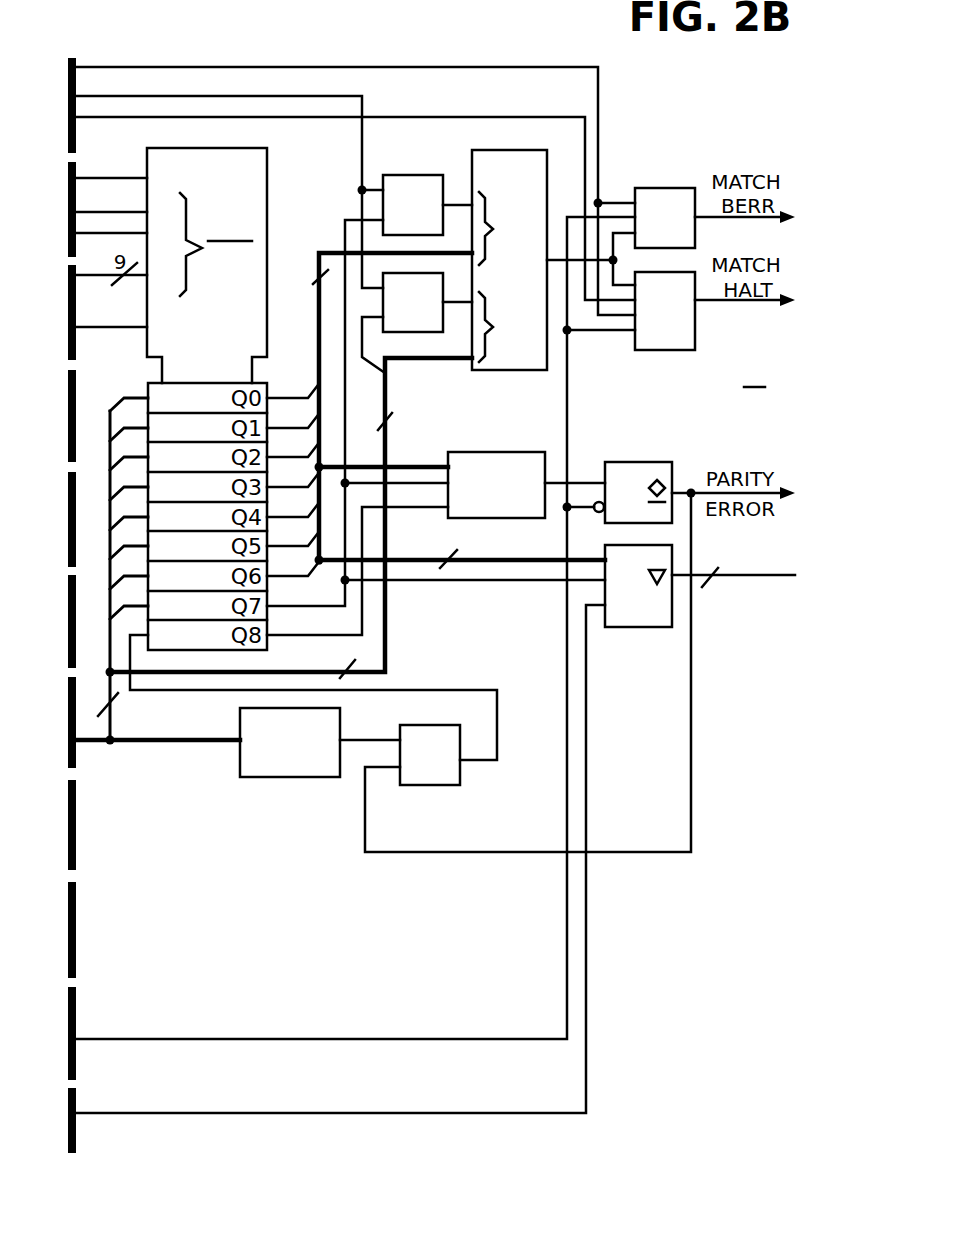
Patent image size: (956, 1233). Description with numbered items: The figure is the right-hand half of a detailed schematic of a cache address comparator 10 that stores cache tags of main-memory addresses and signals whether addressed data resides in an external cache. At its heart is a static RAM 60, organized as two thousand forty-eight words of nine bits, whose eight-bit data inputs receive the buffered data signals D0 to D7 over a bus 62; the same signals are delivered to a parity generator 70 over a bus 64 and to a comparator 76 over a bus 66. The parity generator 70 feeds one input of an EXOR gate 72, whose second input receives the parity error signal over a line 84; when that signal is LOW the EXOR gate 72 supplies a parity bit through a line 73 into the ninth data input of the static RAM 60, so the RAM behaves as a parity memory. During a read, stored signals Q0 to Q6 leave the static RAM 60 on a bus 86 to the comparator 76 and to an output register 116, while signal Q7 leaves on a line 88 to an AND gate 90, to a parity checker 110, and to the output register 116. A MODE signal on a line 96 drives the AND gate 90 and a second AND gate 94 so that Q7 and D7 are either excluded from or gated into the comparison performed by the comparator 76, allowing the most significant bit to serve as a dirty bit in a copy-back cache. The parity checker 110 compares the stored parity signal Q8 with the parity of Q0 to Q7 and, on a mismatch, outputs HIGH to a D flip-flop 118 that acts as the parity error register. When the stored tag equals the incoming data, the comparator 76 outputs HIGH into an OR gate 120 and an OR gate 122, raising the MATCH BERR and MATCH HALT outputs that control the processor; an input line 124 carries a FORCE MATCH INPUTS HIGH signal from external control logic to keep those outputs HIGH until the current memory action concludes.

The cache address comparator 10 is at (753, 375).
The static RAM 60 is at (267, 165).
The bus 62 is at (112, 730).
The bus 64 is at (172, 745).
The bus 66 is at (385, 628).
The parity generator 70 is at (343, 720).
The EXOR gate 72 is at (423, 785).
The line 73 is at (445, 690).
The comparator 76 is at (500, 150).
The line 84 is at (423, 852).
The bus 86 is at (320, 253).
The line 88 is at (283, 603).
The AND gate 90 is at (425, 175).
The AND gate 94 is at (398, 333).
The line 96 is at (347, 95).
The parity checker 110 is at (480, 518).
The output register 116 is at (618, 627).
The D flip-flop 118 is at (635, 462).
The OR gate 120 is at (680, 188).
The OR gate 122 is at (678, 350).
The input line 124 is at (240, 67).